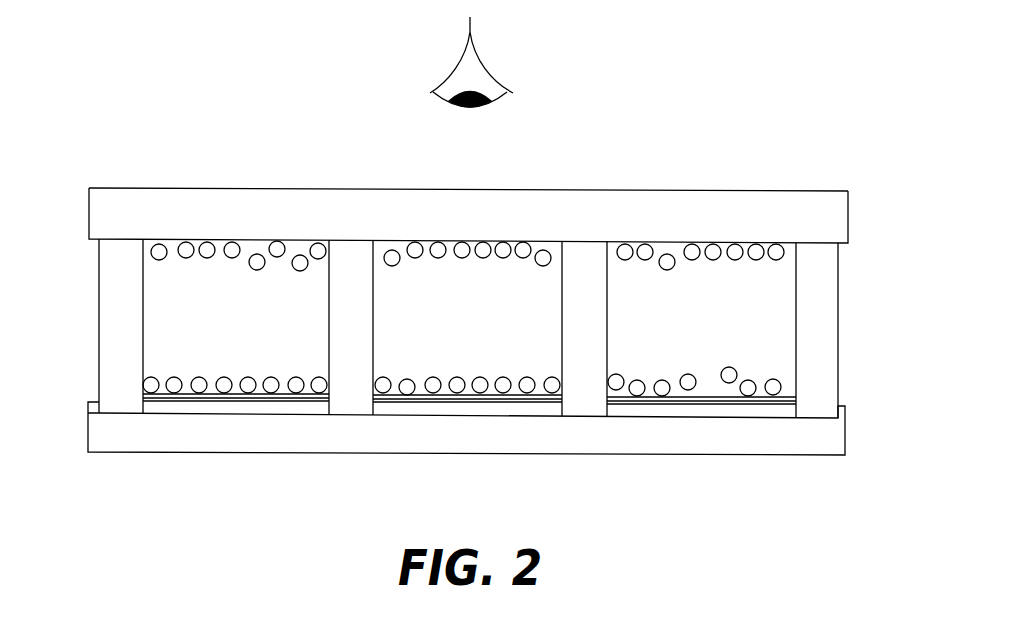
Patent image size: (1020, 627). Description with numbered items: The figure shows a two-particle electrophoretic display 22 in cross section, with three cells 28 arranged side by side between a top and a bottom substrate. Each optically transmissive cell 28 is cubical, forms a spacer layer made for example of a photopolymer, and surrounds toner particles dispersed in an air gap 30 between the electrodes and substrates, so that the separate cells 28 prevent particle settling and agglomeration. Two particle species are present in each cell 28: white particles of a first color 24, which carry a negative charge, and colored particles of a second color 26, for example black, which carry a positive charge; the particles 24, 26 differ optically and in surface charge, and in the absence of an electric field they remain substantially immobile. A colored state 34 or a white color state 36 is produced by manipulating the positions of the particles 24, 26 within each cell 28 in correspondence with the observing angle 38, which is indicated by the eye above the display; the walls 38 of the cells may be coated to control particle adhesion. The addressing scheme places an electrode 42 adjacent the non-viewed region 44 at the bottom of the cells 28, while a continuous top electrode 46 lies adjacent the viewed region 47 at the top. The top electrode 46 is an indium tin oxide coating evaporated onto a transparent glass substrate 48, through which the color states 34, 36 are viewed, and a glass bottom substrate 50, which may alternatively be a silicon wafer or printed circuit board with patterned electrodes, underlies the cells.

The two-particle electrophoretic display 22 is at (837, 157).
The particle species of a first color 24 is at (226, 377).
The particle species of a second color 26 is at (258, 270).
The optically transmissive cell 28 is at (97, 318).
The air gap 30 is at (772, 337).
The colored state 34 is at (283, 239).
The white color state 36 is at (443, 238).
The observing angle 38 is at (505, 114).
The electrode 42 is at (241, 413).
The non-viewed region 44 is at (397, 397).
The top electrode 46 is at (849, 214).
The viewed region 47 is at (628, 190).
The transparent glass substrate 48 is at (853, 186).
The glass bottom substrate 50 is at (775, 448).